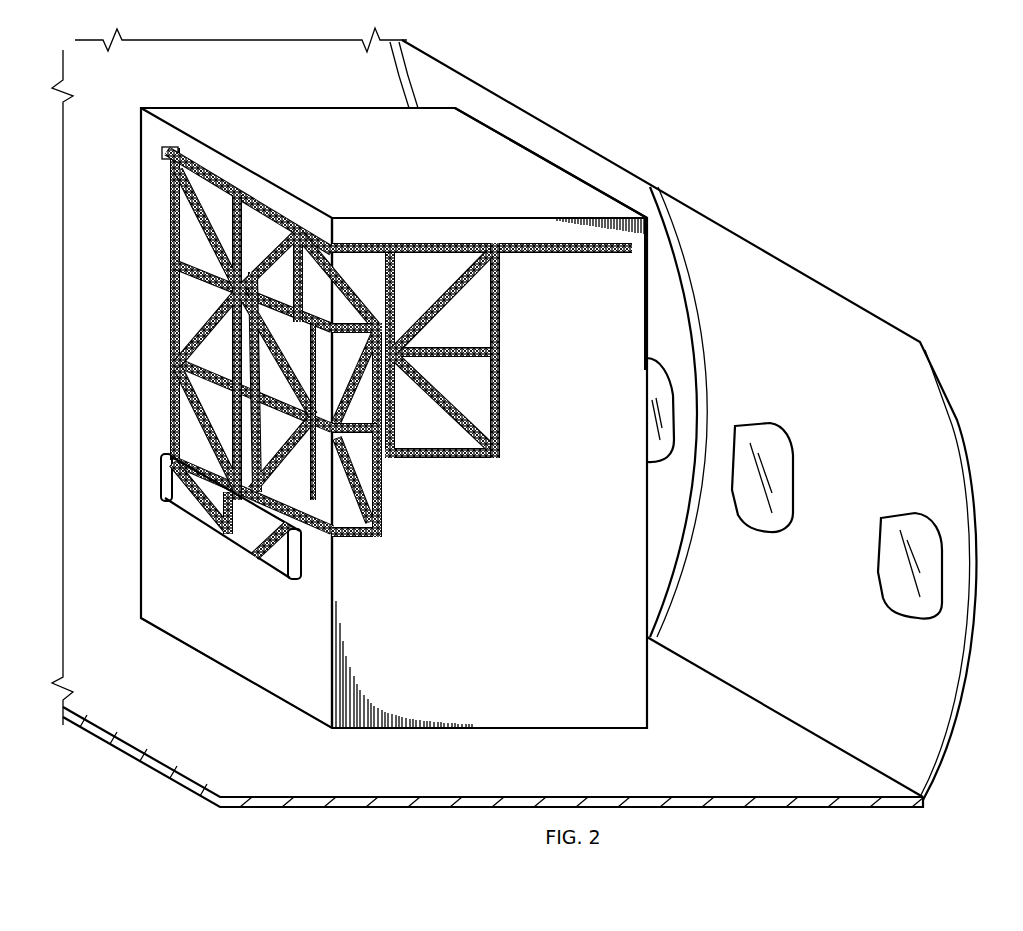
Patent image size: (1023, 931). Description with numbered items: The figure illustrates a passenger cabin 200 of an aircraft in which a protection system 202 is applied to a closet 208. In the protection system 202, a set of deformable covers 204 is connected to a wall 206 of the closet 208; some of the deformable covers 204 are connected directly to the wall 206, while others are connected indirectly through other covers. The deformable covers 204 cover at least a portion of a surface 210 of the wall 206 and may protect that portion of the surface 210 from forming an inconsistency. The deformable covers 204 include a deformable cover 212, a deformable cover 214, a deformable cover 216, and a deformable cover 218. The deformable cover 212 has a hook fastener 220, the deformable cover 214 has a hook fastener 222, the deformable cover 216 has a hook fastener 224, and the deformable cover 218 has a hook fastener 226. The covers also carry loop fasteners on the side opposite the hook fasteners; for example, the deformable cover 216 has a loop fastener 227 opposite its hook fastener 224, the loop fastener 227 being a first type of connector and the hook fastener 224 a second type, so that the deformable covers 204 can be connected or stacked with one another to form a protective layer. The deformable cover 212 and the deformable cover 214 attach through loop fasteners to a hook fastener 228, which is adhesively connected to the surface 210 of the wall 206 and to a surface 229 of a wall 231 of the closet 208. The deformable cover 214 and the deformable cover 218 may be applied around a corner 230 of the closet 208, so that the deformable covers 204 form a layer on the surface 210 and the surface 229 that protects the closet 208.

The passenger cabin 200 is at (693, 157).
The protection system 202 is at (553, 455).
The deformable covers 204 is at (474, 380).
The wall 206 is at (488, 217).
The closet 208 is at (298, 106).
The surface 210 is at (495, 712).
The deformable cover 212 is at (168, 228).
The deformable cover 214 is at (500, 334).
The deformable cover 216 is at (168, 393).
The deformable cover 218 is at (383, 477).
The hook fastener 220 is at (168, 297).
The hook fastener 222 is at (500, 404).
The hook fastener 224 is at (168, 441).
The hook fastener 226 is at (383, 518).
The loop fastener 227 is at (212, 533).
The hook fastener 228 is at (568, 255).
The surface 229 is at (242, 643).
The corner 230 is at (321, 217).
The wall 231 is at (243, 178).